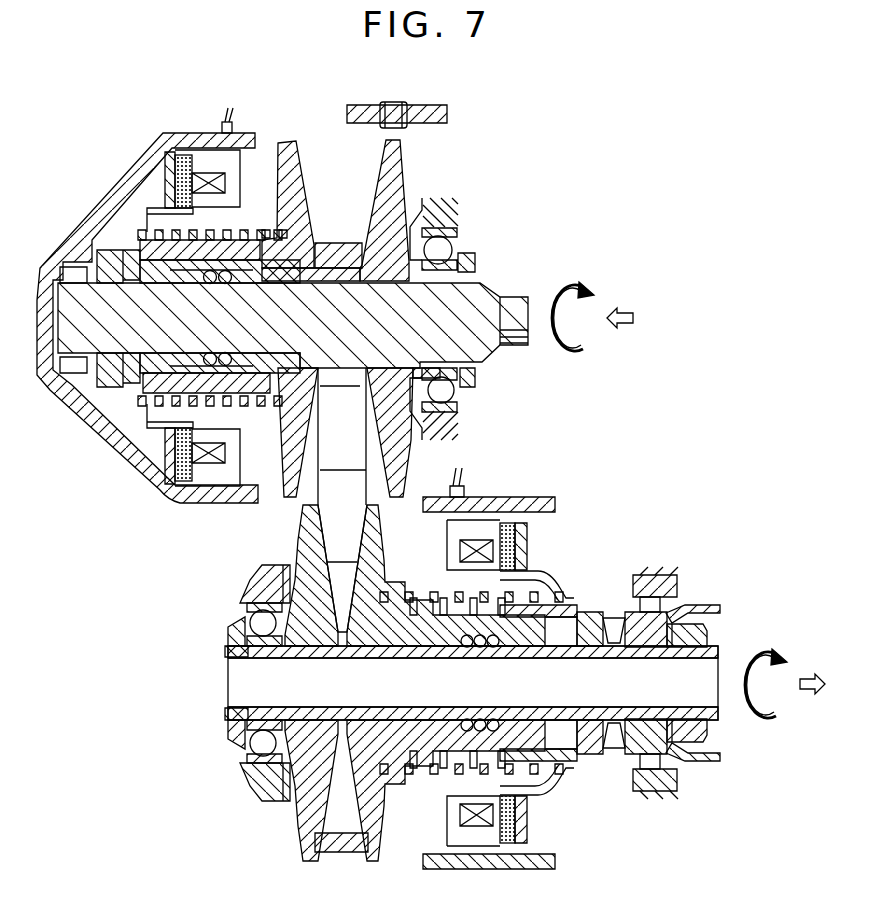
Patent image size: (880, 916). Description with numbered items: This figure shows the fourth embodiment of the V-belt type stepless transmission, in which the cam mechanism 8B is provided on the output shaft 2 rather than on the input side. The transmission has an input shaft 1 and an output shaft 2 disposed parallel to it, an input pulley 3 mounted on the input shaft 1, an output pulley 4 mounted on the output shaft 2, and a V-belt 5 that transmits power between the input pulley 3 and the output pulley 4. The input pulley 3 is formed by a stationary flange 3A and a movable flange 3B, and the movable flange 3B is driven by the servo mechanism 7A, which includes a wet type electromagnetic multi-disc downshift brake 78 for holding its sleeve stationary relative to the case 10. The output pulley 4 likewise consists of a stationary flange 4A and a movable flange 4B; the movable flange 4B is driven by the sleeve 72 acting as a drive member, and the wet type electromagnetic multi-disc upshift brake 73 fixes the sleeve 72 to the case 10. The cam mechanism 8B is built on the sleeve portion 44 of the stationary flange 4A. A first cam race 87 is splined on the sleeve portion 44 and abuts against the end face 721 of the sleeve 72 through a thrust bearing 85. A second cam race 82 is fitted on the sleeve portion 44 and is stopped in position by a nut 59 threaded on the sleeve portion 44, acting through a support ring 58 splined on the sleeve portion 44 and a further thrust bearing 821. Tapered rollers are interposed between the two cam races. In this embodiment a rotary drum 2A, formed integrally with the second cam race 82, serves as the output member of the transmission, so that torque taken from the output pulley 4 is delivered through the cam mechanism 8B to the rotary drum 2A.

The input shaft 1 is at (505, 295).
The output shaft 2 is at (640, 658).
The rotary drum 2A is at (705, 604).
The input pulley 3 is at (363, 314).
The stationary flange of input pulley 3A is at (410, 156).
The movable flange of input pulley 3B is at (295, 176).
The output pulley 4 is at (389, 699).
The stationary flange of output pulley 4A is at (297, 812).
The movable flange of output pulley 4B is at (383, 812).
The V-belt 5 is at (338, 245).
The servo mechanism 7A is at (157, 192).
The downshift brake 78 is at (190, 160).
The case 10 is at (487, 498).
The upshift brake 73 is at (530, 541).
The thrust bearing 85 is at (581, 612).
The sleeve portion 44 is at (537, 712).
The support ring 58 is at (681, 718).
The nut 59 is at (702, 734).
The second cam race 82 is at (637, 760).
The thrust bearing 821 is at (670, 762).
The first cam race 87 is at (584, 767).
The cam mechanism 8B is at (608, 762).
The sleeve 72 is at (477, 765).
The end face of sleeve 721 is at (567, 745).